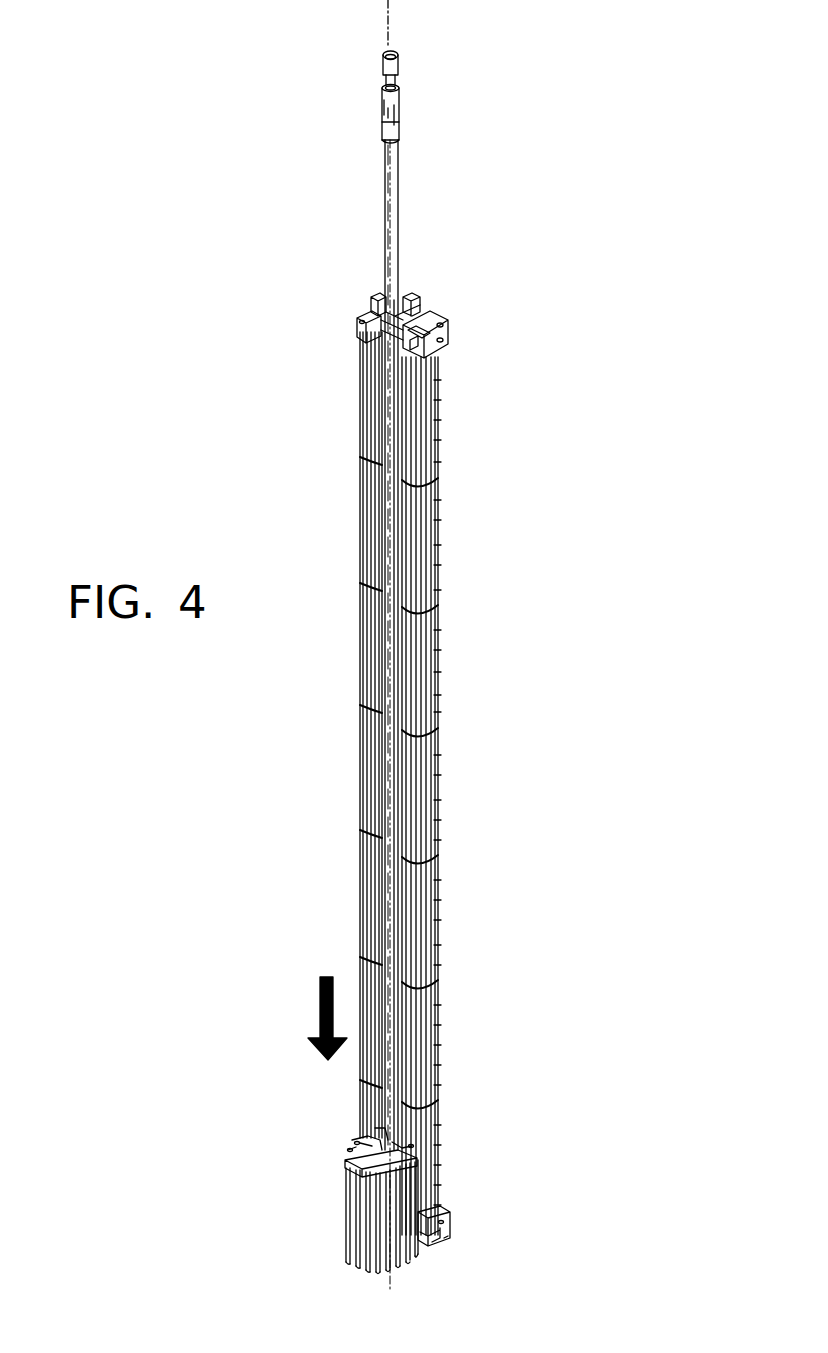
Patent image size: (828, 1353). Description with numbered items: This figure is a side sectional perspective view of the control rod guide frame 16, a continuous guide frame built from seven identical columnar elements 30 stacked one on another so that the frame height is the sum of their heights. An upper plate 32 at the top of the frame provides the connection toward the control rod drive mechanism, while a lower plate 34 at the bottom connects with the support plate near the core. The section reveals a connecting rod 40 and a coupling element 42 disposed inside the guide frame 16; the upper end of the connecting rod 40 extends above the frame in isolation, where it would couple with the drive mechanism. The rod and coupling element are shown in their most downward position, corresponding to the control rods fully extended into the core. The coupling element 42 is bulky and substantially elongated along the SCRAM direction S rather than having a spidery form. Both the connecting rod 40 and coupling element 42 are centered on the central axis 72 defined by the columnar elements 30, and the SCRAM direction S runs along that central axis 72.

The control rod guide frame 16 is at (580, 546).
The central axis 72 is at (390, 48).
The connecting rod 40 is at (386, 240).
The upper plate 32 is at (420, 318).
The columnar elements 30 is at (440, 430).
The coupling element 42 is at (352, 1200).
The lower plate 34 is at (446, 1242).
The SCRAM direction S is at (325, 1028).